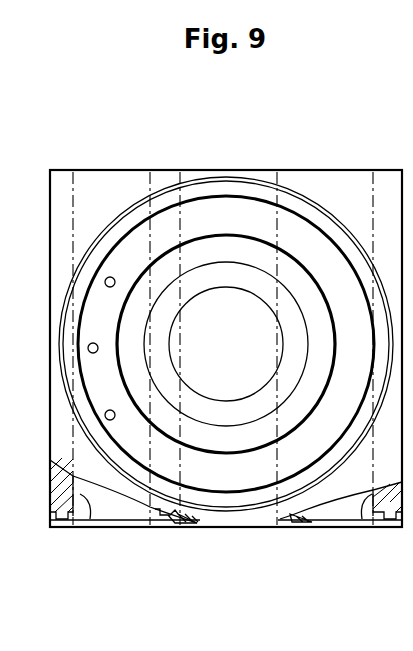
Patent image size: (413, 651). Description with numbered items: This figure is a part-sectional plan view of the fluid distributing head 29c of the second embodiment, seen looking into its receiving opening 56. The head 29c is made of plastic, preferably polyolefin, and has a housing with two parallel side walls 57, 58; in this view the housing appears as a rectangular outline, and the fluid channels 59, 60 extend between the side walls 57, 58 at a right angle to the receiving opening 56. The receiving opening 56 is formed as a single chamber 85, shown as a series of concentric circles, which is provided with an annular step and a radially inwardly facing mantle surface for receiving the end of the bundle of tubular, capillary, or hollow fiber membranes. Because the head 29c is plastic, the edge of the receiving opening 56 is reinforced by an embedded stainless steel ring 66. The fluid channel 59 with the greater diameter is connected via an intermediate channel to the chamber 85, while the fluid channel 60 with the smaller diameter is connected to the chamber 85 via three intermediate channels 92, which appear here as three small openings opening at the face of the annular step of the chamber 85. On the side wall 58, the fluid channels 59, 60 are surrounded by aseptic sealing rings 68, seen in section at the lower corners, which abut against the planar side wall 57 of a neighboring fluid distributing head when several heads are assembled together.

The fluid distributing head 29c is at (101, 140).
The receiving opening 56 is at (227, 226).
The side wall 57 is at (168, 166).
The side wall 58 is at (295, 585).
The fluid channel 59 is at (364, 530).
The fluid channel 60 is at (93, 530).
The stainless steel ring 66 is at (84, 437).
The aseptic sealing ring 68 is at (163, 530).
The chamber 85 is at (291, 268).
The intermediate channel 92 is at (106, 411).